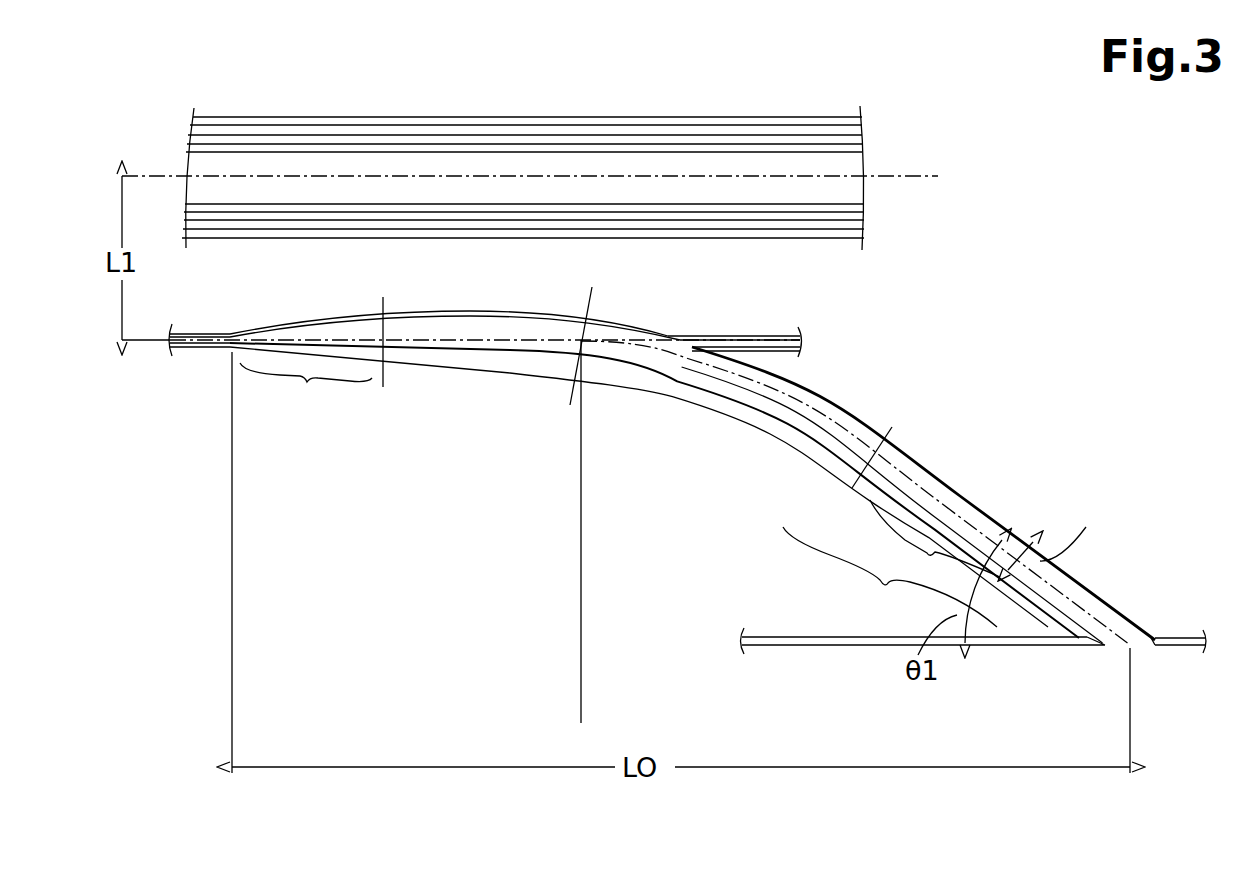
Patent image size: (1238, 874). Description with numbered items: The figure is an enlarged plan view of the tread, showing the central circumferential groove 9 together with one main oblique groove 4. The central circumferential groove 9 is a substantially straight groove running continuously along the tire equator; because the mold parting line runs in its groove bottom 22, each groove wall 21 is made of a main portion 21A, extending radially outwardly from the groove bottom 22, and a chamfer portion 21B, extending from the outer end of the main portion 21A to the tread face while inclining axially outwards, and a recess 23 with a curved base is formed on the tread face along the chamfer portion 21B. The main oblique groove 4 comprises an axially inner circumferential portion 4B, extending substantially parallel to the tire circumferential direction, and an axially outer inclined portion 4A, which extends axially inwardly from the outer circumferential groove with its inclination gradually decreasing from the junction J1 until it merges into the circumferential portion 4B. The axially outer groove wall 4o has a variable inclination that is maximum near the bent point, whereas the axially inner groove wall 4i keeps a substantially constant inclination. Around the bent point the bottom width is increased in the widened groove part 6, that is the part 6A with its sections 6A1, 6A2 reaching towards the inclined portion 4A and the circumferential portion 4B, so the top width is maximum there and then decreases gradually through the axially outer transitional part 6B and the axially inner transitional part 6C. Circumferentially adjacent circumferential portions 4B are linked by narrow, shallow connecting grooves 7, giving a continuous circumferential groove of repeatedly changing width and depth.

The central circumferential groove 9 is at (577, 163).
The recess 23 is at (802, 117).
The groove bottom 22 is at (862, 160).
The groove wall 21 is at (608, 244).
The main portion 21A is at (864, 204).
The chamfer portion 21B is at (864, 218).
The connecting groove 7 is at (187, 333).
The cleaning blade 6 is at (503, 370).
The part 6A is at (628, 450).
The blade edge surface 6A1 is at (651, 282).
The blade edge surface 6A2 is at (549, 276).
The axially outer transitional part 6B is at (837, 482).
The axially inner transitional part 6C is at (510, 413).
The main oblique groove 4 is at (709, 492).
The inclined portion 4A is at (855, 718).
The circumferential portion 4B is at (405, 742).
The axially outer groove wall 4o is at (913, 498).
The axially inner groove wall 4i is at (969, 488).
The junction J1 is at (1161, 549).